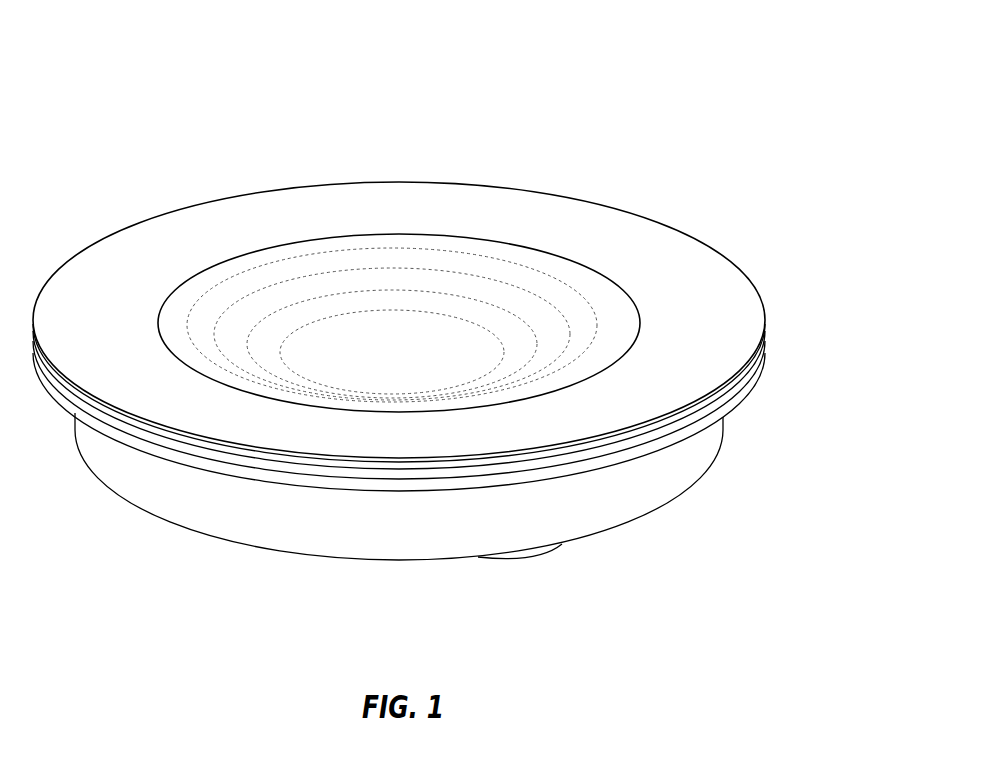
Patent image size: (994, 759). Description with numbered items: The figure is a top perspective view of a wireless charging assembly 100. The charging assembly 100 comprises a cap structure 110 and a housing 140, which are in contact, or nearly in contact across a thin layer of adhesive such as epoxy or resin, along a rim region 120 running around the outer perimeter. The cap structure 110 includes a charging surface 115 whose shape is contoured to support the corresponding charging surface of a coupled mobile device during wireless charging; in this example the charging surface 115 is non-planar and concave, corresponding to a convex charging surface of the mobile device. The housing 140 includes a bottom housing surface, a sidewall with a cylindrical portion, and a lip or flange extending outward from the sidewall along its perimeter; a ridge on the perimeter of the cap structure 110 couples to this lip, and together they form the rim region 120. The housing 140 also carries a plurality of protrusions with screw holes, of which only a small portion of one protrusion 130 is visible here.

The wireless charging assembly 100 is at (433, 319).
The cap structure 110 is at (408, 213).
The charging surface 115 is at (360, 327).
The rim region 120 is at (763, 358).
The protrusion 130 is at (535, 562).
The housing 140 is at (240, 513).